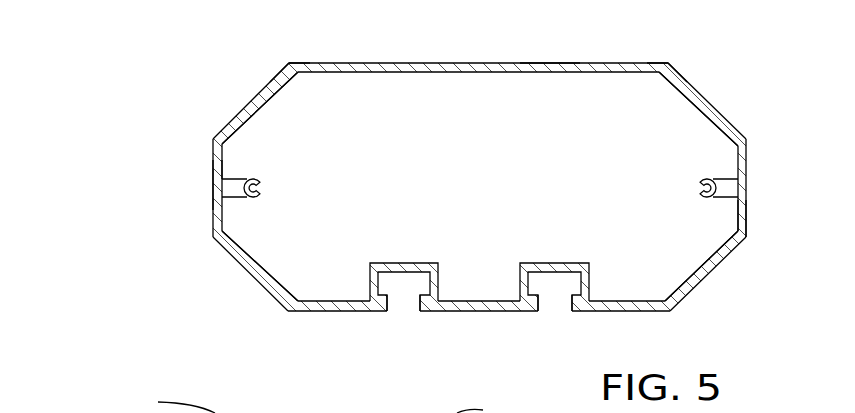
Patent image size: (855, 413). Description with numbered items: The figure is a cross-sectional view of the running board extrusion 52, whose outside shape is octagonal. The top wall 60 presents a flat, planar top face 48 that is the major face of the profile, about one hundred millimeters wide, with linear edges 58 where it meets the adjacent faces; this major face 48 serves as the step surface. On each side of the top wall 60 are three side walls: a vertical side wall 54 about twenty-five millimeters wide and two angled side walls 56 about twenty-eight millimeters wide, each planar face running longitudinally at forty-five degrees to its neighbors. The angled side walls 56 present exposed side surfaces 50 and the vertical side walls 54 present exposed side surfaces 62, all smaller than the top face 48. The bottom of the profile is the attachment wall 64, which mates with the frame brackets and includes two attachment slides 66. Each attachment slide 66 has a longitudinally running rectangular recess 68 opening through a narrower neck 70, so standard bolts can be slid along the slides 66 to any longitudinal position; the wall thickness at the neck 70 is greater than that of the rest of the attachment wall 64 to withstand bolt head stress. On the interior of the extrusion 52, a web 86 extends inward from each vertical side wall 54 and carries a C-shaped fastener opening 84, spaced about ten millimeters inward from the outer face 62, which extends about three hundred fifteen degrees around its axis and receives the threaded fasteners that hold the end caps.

The top face 48 is at (400, 63).
The side surface 50 is at (232, 118).
The extrusion 52 is at (167, 57).
The vertical side wall 54 is at (213, 218).
The angled side wall 56 is at (277, 84).
The edge 58 is at (288, 63).
The top wall 60 is at (540, 63).
The side surface 62 is at (213, 186).
The attachment wall 64 is at (622, 306).
The attachment slide 66 is at (408, 263).
The recess 68 is at (392, 285).
The neck 70 is at (422, 285).
The fastener opening 84 is at (253, 177).
The web 86 is at (247, 199).